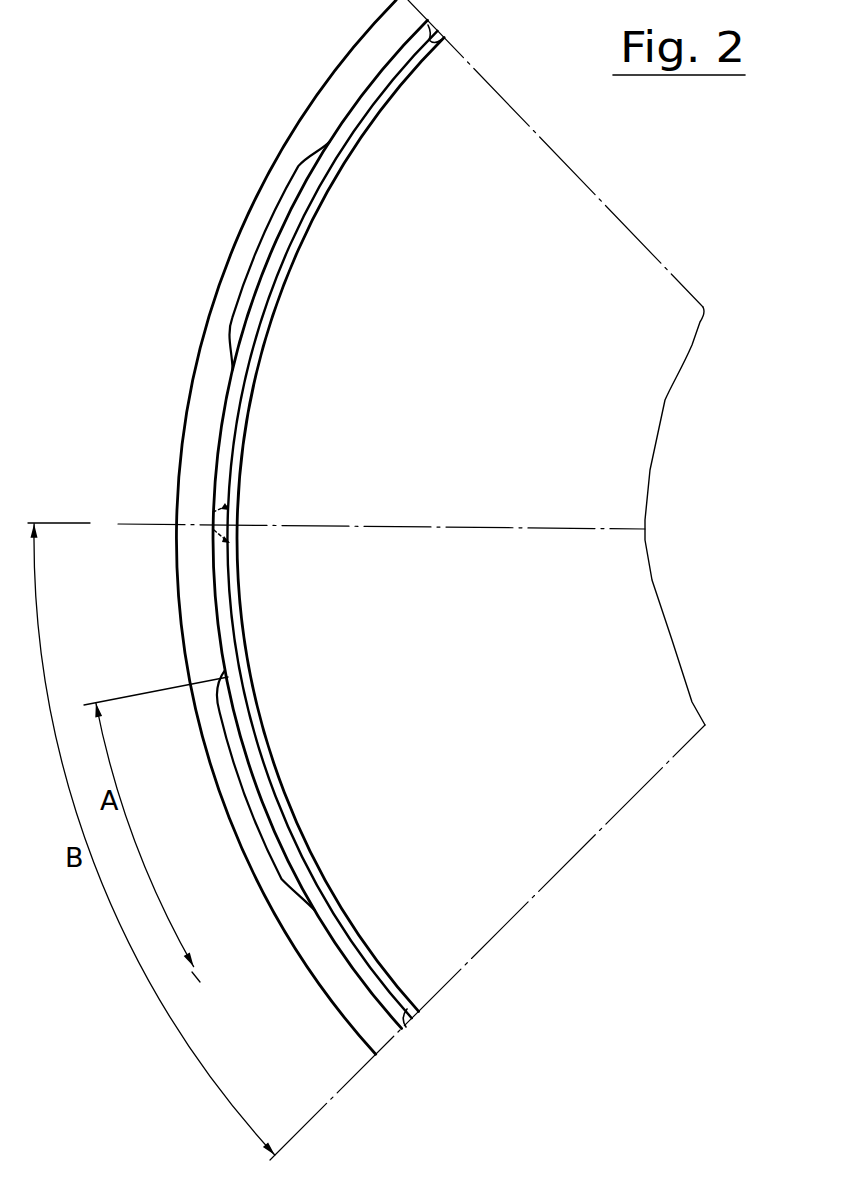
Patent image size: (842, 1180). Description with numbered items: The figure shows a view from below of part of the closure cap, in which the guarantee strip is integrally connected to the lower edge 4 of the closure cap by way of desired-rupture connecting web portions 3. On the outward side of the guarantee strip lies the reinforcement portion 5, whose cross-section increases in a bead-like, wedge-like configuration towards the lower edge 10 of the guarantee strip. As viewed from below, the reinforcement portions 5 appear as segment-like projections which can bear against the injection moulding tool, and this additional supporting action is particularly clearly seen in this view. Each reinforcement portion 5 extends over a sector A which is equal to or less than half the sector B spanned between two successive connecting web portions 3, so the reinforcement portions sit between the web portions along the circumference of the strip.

The connecting web portions 3 is at (217, 515).
The lower edge of the closure cap 4 is at (367, 1010).
The reinforcement portion 5 is at (263, 262).
The lower edge of the guarantee strip 10 is at (343, 940).